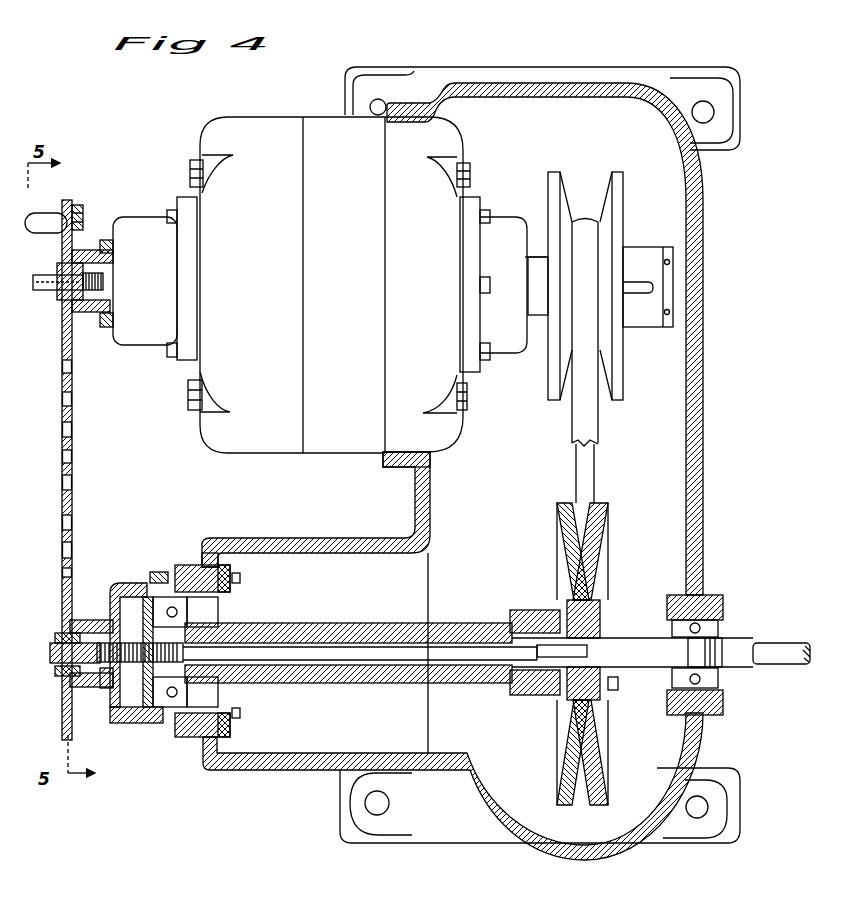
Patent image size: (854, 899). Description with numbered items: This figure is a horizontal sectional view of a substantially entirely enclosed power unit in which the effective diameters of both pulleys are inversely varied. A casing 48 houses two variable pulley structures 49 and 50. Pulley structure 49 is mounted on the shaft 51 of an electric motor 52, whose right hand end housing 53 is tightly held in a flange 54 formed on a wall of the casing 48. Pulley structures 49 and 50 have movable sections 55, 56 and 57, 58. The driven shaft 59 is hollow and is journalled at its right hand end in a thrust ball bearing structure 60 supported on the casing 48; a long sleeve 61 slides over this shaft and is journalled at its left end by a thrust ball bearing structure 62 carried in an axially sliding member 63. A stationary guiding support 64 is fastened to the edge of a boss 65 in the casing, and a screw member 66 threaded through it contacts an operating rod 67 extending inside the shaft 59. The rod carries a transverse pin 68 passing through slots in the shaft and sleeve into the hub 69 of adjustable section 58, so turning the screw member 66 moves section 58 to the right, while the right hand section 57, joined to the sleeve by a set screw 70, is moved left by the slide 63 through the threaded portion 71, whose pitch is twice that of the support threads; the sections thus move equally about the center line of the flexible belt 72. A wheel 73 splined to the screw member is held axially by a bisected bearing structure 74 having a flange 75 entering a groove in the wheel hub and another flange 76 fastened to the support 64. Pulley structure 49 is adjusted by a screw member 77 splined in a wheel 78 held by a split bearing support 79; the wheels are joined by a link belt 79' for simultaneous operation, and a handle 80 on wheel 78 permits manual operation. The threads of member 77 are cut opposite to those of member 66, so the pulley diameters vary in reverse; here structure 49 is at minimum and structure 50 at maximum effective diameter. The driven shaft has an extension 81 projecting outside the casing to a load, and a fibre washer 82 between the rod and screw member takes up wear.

The casing 48 is at (703, 321).
The variable pulley structure 49 is at (589, 287).
The variable pulley structure 50 is at (580, 654).
The shaft 51 is at (528, 278).
The electric motor 52 is at (352, 299).
The right hand end housing 53 is at (437, 440).
The flange 54 is at (393, 468).
The movable section 55 is at (624, 380).
The movable section 56 is at (550, 388).
The movable section 57 is at (609, 547).
The movable section 58 is at (558, 540).
The driven shaft 59 is at (650, 638).
The thrust ball bearing structure 60 is at (708, 626).
The sleeve 61 is at (462, 598).
The thrust ball bearing structure 62 is at (165, 580).
The axially sliding member 63 is at (140, 713).
The stationary guiding support 64 is at (150, 722).
The boss 65 is at (196, 565).
The screw member 66 is at (104, 678).
The operating rod 67 is at (298, 684).
The transverse pin 68 is at (557, 612).
The hub 69 is at (522, 695).
The set screw 70 is at (614, 690).
The threaded portion 71 is at (113, 718).
The flexible belt 72 is at (596, 470).
The wheel 73 is at (63, 713).
The bisected bearing structure 74 is at (92, 618).
The flange 75 is at (65, 683).
The flange 76 is at (106, 598).
The screw member 77 is at (88, 250).
The wheel 78 is at (62, 332).
The split bearing support 79 is at (98, 305).
The link belt 79' is at (91, 468).
The handle 80 is at (43, 214).
The extension 81 is at (778, 668).
The fibre washer 82 is at (212, 642).